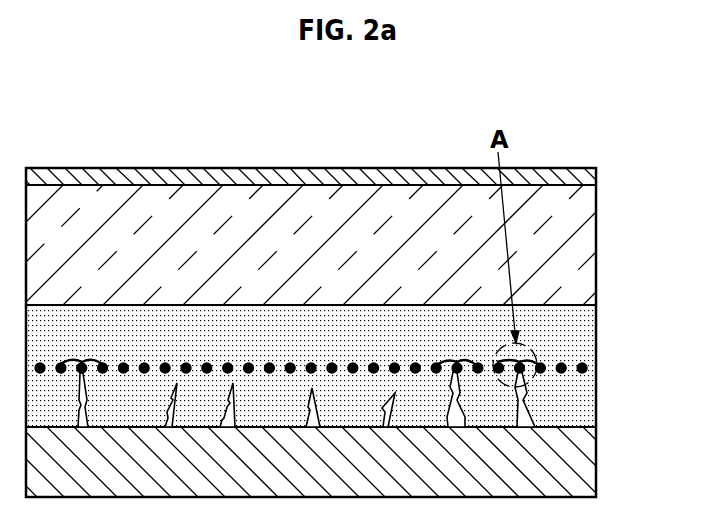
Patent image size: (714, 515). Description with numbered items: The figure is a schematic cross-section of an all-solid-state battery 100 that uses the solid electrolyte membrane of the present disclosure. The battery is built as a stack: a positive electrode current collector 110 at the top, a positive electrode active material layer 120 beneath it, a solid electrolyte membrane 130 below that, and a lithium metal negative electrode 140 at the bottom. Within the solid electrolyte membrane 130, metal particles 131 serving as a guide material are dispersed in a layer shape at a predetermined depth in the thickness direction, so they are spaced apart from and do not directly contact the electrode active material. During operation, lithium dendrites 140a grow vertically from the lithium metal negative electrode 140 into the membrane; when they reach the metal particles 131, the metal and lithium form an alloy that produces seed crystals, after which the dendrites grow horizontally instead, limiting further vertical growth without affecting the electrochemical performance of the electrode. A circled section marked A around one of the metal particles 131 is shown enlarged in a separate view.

The all-solid-state battery 100 is at (68, 128).
The positive electrode current collector 110 is at (597, 178).
The positive electrode active material layer 120 is at (590, 244).
The solid electrolyte membrane 130 is at (588, 335).
The metal particle 131 is at (562, 376).
The lithium metal negative electrode 140 is at (590, 463).
The lithium dendrite 140a is at (530, 398).